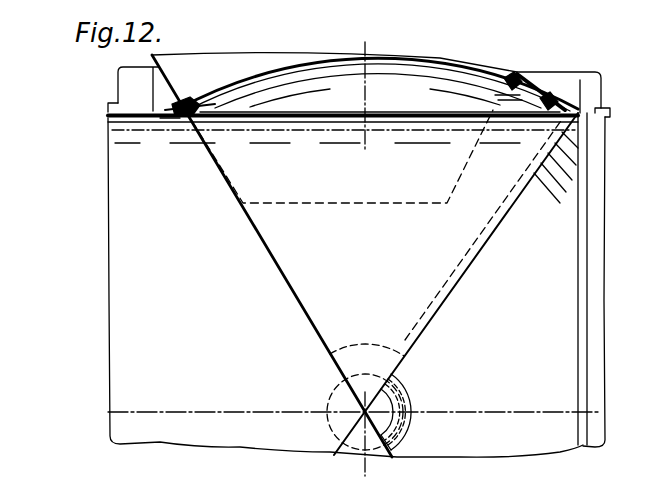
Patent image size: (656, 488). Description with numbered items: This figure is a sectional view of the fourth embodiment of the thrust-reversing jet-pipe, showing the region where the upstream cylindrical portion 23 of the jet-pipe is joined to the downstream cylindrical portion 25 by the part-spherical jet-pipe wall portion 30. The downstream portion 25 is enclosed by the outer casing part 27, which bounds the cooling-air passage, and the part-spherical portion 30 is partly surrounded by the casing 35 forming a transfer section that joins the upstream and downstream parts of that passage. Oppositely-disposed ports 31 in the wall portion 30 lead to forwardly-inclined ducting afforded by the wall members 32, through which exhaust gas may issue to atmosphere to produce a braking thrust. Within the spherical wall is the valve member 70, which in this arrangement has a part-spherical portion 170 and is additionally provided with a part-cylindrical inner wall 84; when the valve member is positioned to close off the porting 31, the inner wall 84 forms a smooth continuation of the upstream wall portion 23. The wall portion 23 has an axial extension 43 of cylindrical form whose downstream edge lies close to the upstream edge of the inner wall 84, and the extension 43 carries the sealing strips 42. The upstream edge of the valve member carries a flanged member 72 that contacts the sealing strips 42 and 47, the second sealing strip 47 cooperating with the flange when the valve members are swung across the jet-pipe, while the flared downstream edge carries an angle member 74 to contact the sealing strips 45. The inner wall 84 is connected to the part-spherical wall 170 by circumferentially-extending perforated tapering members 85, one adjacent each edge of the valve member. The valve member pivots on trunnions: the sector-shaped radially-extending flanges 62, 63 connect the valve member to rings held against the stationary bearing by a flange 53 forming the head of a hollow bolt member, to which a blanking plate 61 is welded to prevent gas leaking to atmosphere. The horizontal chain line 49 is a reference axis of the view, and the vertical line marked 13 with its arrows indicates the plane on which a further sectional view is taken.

The vertical center axis 13 is at (355, 46).
The upstream cylindrical portion 23 is at (134, 113).
The downstream cylindrical portion 25 is at (601, 122).
The outer casing part 27 is at (603, 118).
The part-spherical jet-pipe wall portion 30 is at (525, 85).
The ports 31 is at (183, 100).
The wall members 32 is at (514, 70).
The casing 35 is at (122, 68).
The sealing strips 42 is at (175, 118).
The extension 43 is at (262, 273).
The sealing strips 45 is at (548, 102).
The second sealing strip 47 is at (500, 92).
The horizontal axis 49 is at (197, 411).
The flange 53 is at (403, 386).
The blanking plates 61 is at (388, 416).
The sector-shaped flange 62 is at (370, 344).
The sector-shaped flange 63 is at (398, 457).
The valve members 70 is at (268, 72).
The flanged members 72 is at (192, 104).
The angle members 74 is at (606, 111).
The part-cylindrical inner walls 84 is at (288, 114).
The perforated tapering members 85 is at (527, 115).
The part-spherical portion 170 is at (328, 64).